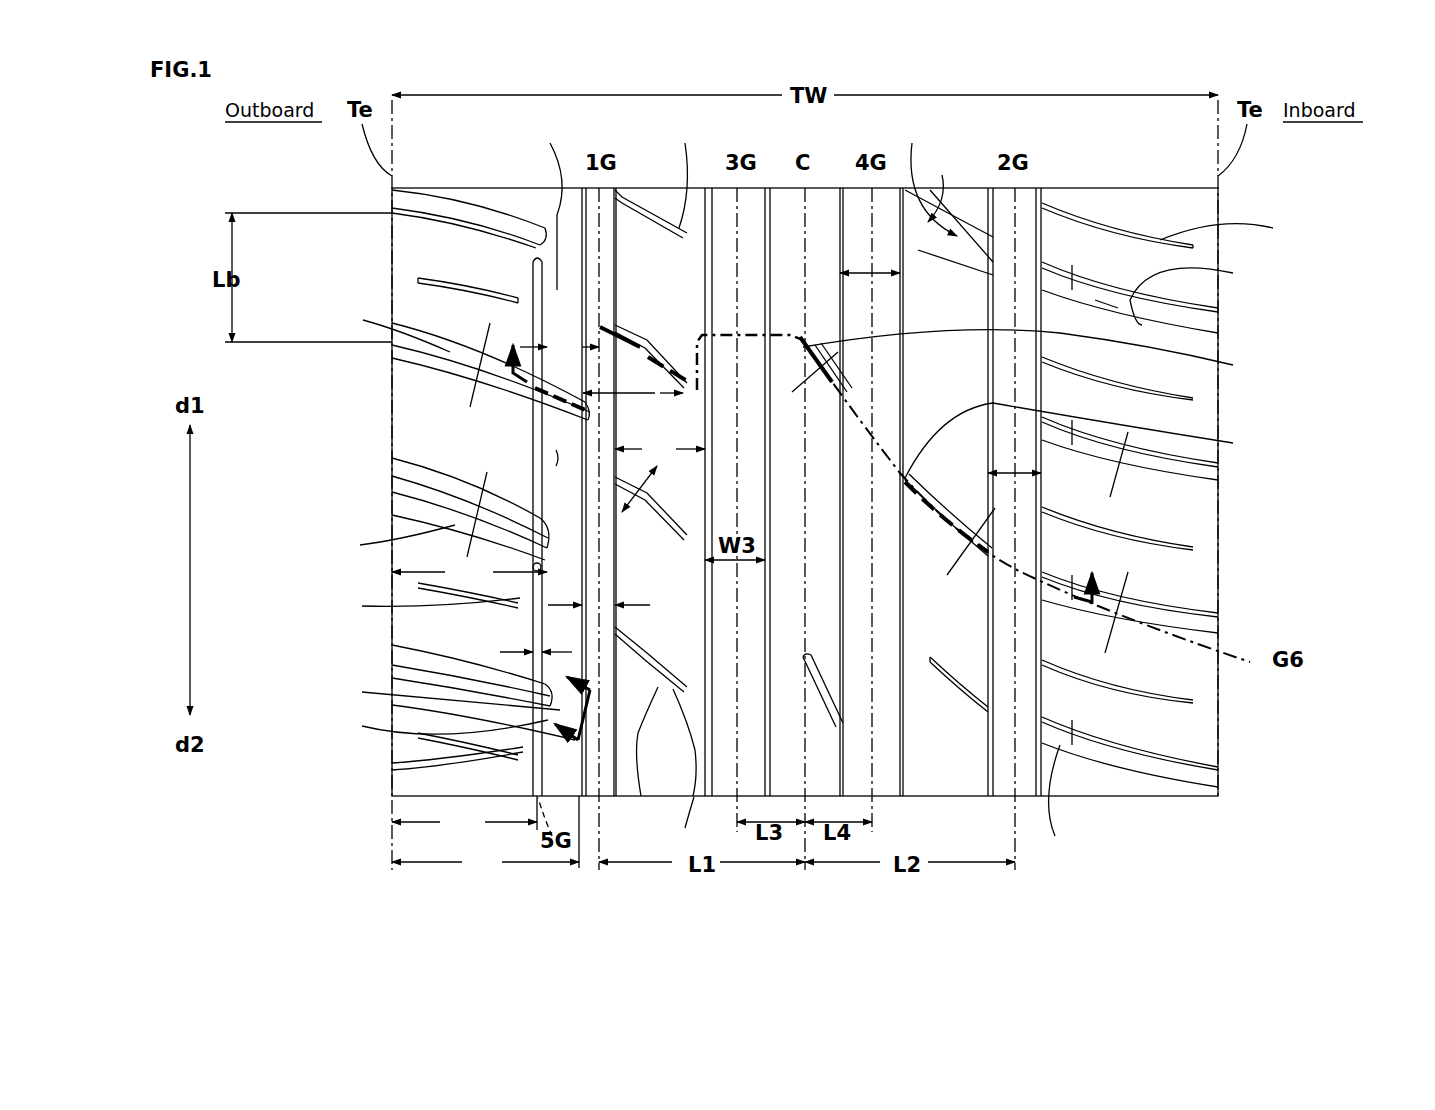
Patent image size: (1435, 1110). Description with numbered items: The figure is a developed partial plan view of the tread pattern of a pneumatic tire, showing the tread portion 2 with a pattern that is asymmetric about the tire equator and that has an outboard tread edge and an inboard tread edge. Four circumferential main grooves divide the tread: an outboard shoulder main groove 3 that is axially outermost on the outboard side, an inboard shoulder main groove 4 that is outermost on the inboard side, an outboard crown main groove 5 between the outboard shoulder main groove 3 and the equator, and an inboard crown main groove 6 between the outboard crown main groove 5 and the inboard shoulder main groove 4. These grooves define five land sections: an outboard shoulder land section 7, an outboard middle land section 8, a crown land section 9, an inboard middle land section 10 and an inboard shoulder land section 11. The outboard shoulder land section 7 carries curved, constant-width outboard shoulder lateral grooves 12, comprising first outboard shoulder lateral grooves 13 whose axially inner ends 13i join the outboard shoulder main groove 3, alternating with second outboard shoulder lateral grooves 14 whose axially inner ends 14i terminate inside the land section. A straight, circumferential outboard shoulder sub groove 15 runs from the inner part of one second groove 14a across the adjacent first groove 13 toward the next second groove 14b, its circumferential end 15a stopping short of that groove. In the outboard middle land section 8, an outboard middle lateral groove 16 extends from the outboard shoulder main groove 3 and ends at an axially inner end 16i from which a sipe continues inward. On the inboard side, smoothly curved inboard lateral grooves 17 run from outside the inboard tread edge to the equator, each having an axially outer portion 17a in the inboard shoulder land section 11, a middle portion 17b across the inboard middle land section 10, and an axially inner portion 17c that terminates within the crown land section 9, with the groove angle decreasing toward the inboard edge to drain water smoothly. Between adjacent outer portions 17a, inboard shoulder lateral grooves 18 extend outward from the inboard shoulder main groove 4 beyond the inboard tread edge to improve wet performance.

The tread portion 2 is at (1135, 185).
The outboard shoulder main groove 3 is at (592, 235).
The inboard shoulder main groove 4 is at (1028, 228).
The outboard crown main groove 5 is at (725, 228).
The inboard crown main groove 6 is at (857, 228).
The outboard shoulder land section 7 is at (467, 268).
The outboard middle land section 8 is at (675, 478).
The crown land section 9 is at (784, 228).
The inboard middle land section 10 is at (959, 262).
The inboard shoulder land section 11 is at (1119, 228).
The outboard shoulder lateral grooves 12 is at (290, 372).
The first outboard shoulder lateral groove 13 is at (440, 362).
The axially inner end of first outboard shoulder lateral groove 13i is at (585, 418).
The second outboard shoulder lateral groove 14 is at (480, 490).
The second outboard shoulder lateral groove 14a is at (442, 490).
The second outboard shoulder lateral groove 14b is at (437, 204).
The axially inner end of second outboard shoulder lateral groove 14i is at (558, 455).
The outboard shoulder sub groove 15 is at (490, 763).
The circumferential end of outboard shoulder sub groove 15a is at (537, 243).
The outboard middle lateral groove 16 is at (640, 650).
The axially inner end of outboard middle lateral groove 16i is at (642, 797).
The inboard lateral groove 17 is at (1372, 393).
The axially outer portion of inboard lateral groove 17a is at (1130, 632).
The middle portion of inboard lateral groove 17b is at (1080, 510).
The axially inner portion of inboard lateral groove 17c is at (935, 372).
The inboard shoulder lateral groove 18 is at (1135, 770).